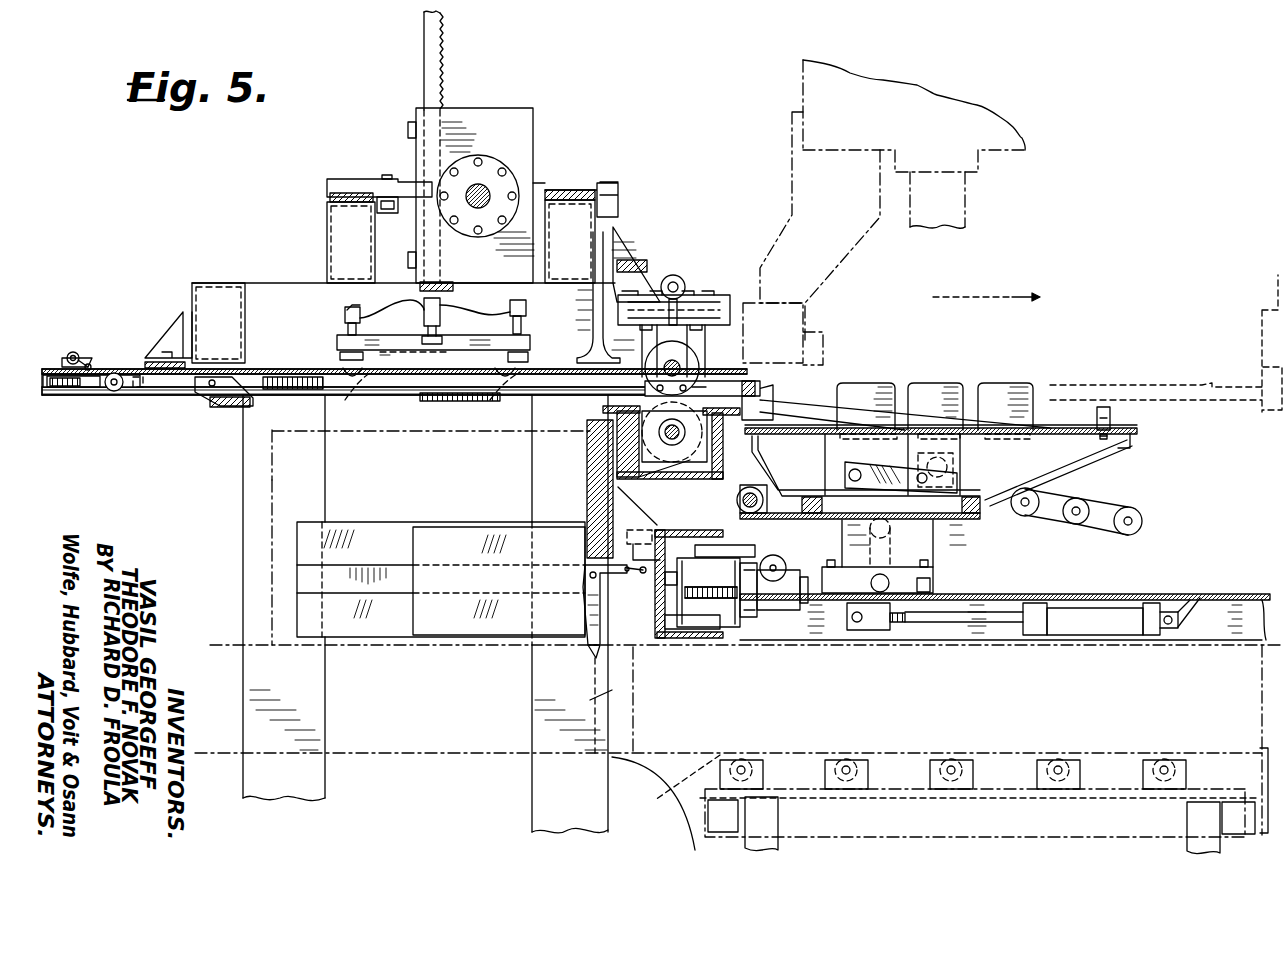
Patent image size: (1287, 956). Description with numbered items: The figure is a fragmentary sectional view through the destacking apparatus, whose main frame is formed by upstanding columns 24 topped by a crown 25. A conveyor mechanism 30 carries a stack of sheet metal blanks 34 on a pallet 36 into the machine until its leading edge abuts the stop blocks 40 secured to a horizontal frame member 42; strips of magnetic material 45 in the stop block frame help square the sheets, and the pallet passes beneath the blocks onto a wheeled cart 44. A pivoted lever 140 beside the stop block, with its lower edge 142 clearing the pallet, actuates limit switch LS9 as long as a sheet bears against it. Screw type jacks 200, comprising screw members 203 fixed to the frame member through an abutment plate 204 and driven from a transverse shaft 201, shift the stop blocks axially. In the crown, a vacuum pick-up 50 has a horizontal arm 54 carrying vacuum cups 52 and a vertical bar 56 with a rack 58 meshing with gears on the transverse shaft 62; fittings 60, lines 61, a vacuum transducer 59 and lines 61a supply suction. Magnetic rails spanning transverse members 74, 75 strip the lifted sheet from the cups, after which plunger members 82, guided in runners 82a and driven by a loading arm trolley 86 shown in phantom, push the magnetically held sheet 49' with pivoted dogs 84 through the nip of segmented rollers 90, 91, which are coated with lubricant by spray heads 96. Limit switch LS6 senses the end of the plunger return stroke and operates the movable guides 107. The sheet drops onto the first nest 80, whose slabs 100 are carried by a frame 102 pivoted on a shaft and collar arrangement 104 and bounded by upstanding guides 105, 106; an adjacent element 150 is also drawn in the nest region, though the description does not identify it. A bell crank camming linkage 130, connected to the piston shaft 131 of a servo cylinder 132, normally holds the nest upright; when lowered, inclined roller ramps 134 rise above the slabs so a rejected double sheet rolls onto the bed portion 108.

The crown 25 is at (574, 129).
The vertical bar 56 is at (422, 40).
The rack 58 is at (447, 100).
The transverse shaft 62 is at (484, 188).
The transverse member 74 is at (327, 213).
The transverse member 75 is at (600, 236).
The loading arm trolley 86 is at (793, 185).
The spray heads 96 is at (682, 280).
The lines 61a is at (462, 292).
The lines 61 is at (370, 306).
The vacuum transducer 59 is at (424, 306).
The fittings 60 is at (346, 320).
The vacuum pick-up 50 is at (322, 348).
The horizontally extending arm 54 is at (528, 350).
The runners 82a is at (85, 395).
The limit switch LS6 is at (74, 352).
The dogs 84 is at (218, 398).
The magnetically held sheet 49' is at (625, 393).
The vacuum cups 52 is at (345, 397).
The plunger members 82 is at (700, 372).
The segmented rollers 90 is at (685, 360).
The segmented rollers 91 is at (622, 476).
The strips of magnetic material 45 is at (588, 518).
The stop blocks 40 is at (588, 546).
The limit switch LS9 is at (655, 530).
The stack of sheet metal blanks 34 is at (270, 482).
The columns 24 is at (243, 541).
The conveyor mechanism 30 is at (392, 744).
The pivoted lever 140 is at (585, 608).
The lower edge 142 is at (590, 650).
The frame member 42 is at (700, 640).
The abutment plate 204 is at (670, 645).
The screw type jacks 200 is at (765, 612).
The screw members 203 is at (735, 612).
The transverse shaft 201 is at (778, 566).
The slabs 100 is at (1050, 434).
The upstanding guides 106 is at (862, 380).
The movable guides 107 is at (935, 383).
The upstanding guides 105 is at (1110, 421).
The first nest 80 is at (1049, 358).
The frame 102 is at (1105, 462).
The inclined roller ramps 134 is at (1142, 512).
The shaft and collar arrangement 104 is at (760, 492).
The plate 150 is at (962, 470).
The bell crank camming linkage 130 is at (896, 566).
The bed portion 108 is at (1255, 594).
The piston shaft 131 is at (962, 630).
The servo cylinder 132 is at (1098, 636).
The wheeled cart 44 is at (1008, 774).
The pallets 36 is at (612, 690).